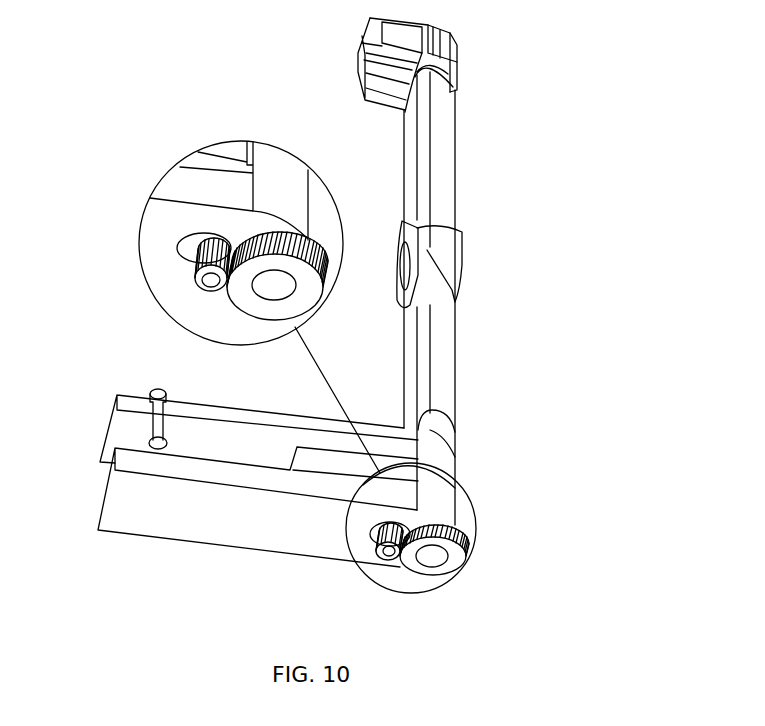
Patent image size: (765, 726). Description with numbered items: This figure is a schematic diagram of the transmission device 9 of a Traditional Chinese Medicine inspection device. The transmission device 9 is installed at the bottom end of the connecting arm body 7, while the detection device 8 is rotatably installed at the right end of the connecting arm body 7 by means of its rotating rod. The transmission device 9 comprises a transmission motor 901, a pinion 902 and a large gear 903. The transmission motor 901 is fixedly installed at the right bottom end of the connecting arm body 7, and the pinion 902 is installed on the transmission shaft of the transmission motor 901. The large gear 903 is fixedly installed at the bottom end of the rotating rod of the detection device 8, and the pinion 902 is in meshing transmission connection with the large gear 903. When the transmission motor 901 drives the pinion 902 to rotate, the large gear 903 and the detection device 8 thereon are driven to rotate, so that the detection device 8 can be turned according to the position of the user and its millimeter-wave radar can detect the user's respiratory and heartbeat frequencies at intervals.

The connecting arm body 7 is at (287, 553).
The detection device 8 is at (430, 330).
The transmission device 9 is at (92, 207).
The transmission motor 901 is at (200, 247).
The pinion 902 is at (205, 278).
The large gear 903 is at (240, 308).